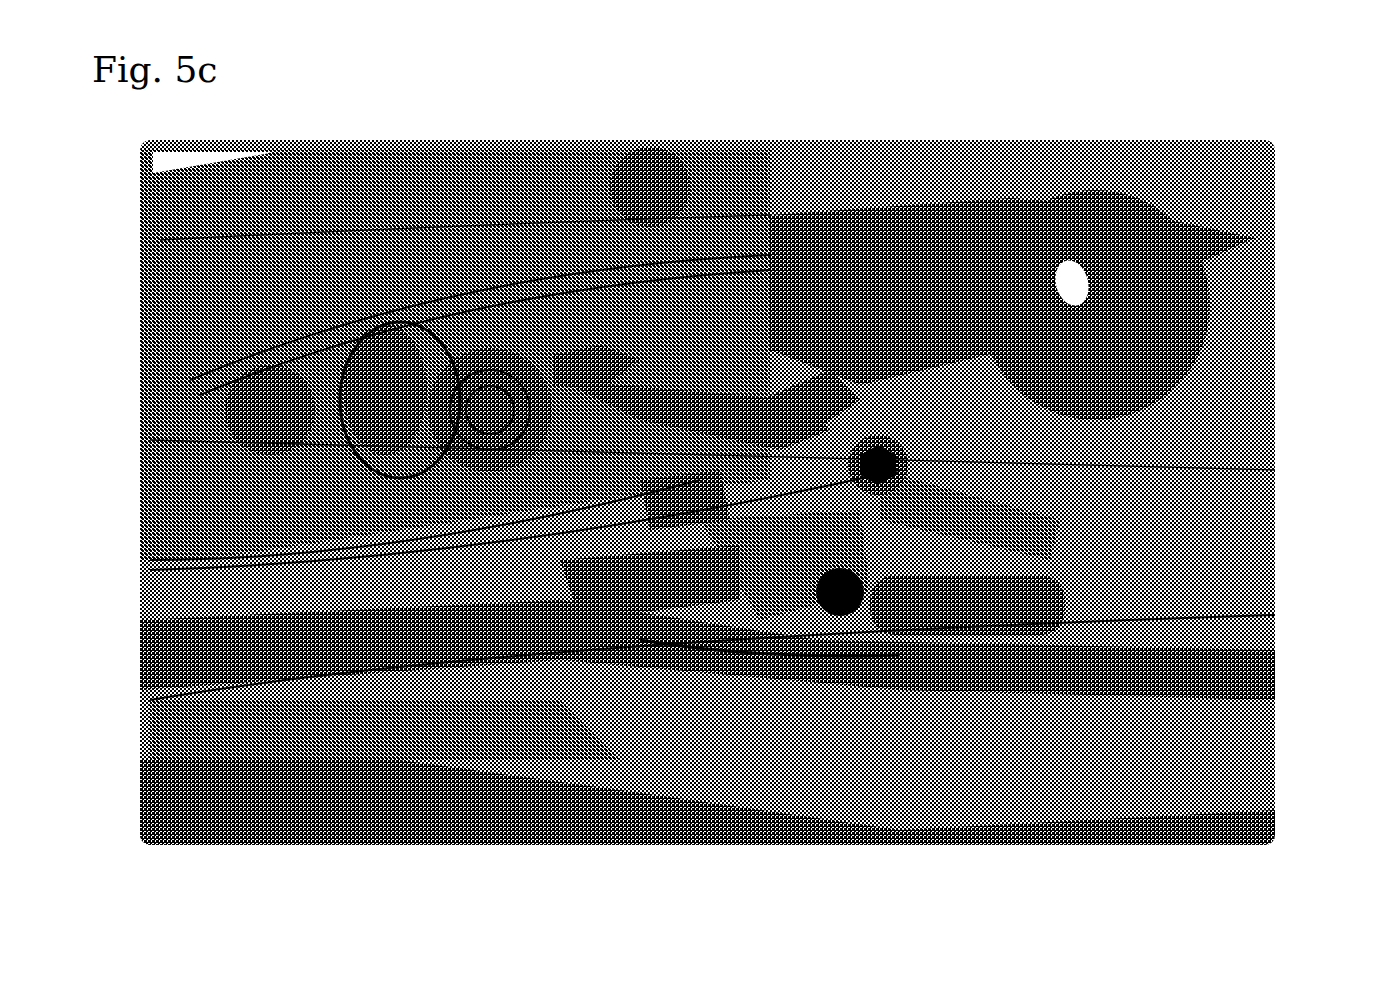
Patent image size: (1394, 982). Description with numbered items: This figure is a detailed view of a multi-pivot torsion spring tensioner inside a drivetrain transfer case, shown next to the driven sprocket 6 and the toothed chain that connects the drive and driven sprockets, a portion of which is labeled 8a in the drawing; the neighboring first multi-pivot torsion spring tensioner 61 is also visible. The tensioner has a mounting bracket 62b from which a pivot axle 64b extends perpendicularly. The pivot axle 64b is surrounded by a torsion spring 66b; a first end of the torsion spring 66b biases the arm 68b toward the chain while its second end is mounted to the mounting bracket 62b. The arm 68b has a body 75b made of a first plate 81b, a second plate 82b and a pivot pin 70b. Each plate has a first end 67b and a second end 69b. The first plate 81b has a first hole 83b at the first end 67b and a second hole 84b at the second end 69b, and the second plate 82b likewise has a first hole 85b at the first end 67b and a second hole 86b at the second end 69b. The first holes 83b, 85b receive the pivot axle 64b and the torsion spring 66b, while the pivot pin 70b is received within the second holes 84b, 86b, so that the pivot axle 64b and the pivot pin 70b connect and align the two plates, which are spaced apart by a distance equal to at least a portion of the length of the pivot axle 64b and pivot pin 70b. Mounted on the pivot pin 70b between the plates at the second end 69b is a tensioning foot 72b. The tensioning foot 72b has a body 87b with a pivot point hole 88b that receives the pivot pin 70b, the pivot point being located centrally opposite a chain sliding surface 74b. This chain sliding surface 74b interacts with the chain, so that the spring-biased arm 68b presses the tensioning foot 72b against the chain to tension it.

The driven sprocket 6 is at (190, 747).
The seat rail 8a is at (545, 722).
The first multi-pivot torsion spring tensioner 61 is at (750, 218).
The mounting bracket 62b is at (292, 225).
The pivot axle 64b is at (475, 398).
The torsion spring 66b is at (394, 350).
The first end 67b is at (557, 367).
The arm 68b is at (598, 497).
The second end 69b is at (795, 572).
The pivot pin 70b is at (860, 612).
The tensioning foot 72b is at (975, 618).
The chain sliding surface 74b is at (790, 658).
The body 75b is at (738, 560).
The first plate 81b is at (377, 327).
The second plate 82b is at (745, 540).
The first hole 83b is at (435, 315).
The second hole 84b is at (790, 425).
The first hole 85b is at (555, 402).
The second hole 86b is at (925, 510).
The body 87b is at (940, 578).
The pivot point hole 88b is at (918, 468).